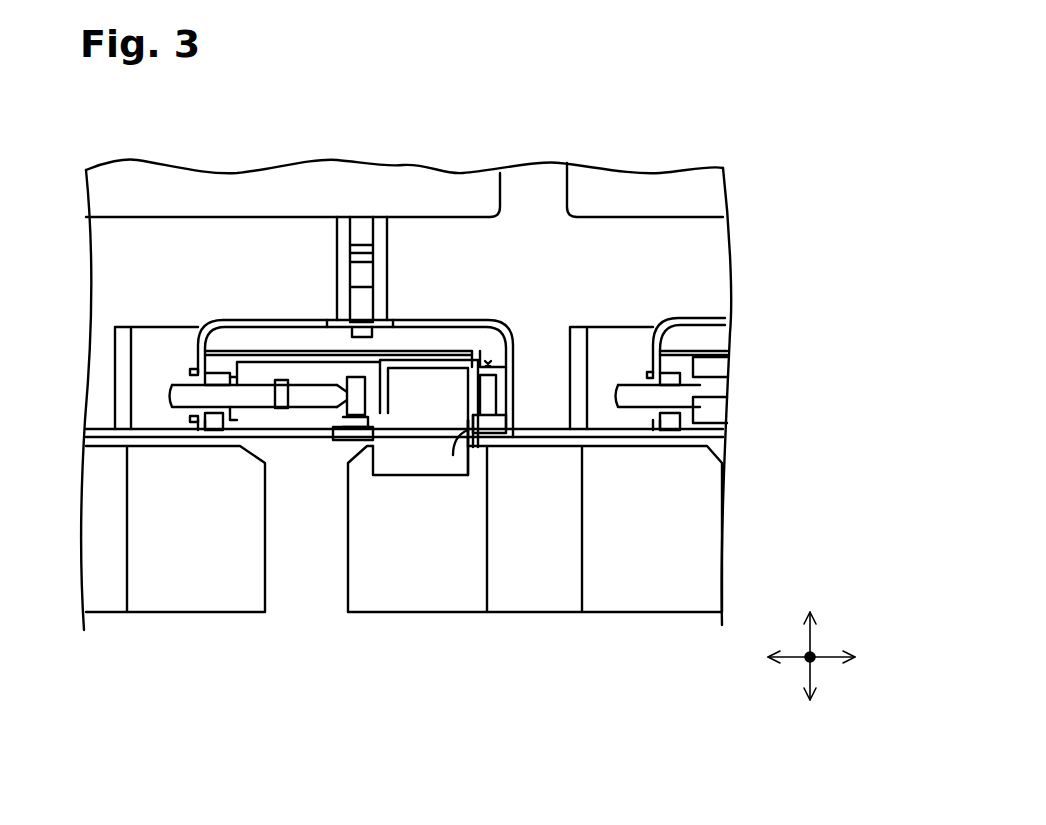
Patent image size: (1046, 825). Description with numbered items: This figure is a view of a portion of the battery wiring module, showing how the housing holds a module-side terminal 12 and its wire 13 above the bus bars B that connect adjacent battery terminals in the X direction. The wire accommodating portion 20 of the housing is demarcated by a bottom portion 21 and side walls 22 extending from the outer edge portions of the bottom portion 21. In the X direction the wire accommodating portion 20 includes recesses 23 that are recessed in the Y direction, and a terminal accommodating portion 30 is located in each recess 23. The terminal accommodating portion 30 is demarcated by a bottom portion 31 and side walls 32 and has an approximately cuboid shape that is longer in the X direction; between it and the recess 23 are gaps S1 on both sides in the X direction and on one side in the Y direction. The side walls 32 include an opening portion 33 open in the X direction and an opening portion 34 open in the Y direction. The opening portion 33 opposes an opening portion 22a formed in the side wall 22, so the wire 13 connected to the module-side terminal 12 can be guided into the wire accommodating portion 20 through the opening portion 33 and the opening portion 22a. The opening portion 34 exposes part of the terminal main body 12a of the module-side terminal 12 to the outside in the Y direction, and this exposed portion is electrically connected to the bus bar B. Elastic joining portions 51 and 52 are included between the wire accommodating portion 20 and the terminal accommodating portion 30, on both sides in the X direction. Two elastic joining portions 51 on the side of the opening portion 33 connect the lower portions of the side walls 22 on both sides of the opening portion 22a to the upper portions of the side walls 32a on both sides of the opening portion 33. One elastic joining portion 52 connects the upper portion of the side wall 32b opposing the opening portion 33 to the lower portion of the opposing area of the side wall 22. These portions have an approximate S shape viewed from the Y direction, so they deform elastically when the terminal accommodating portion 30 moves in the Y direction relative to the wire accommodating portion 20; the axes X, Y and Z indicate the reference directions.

The wire accommodating portion 20 is at (715, 227).
The bottom portion 21 is at (715, 253).
The side walls 22 is at (489, 319).
The opening portion 22a is at (180, 421).
The recesses 23 is at (457, 334).
The terminal accommodating portion 30 is at (310, 350).
The bottom portions 31 is at (267, 373).
The side walls 32 is at (398, 360).
The side walls 32a is at (233, 426).
The side wall 32b is at (462, 372).
The opening portion 33 is at (258, 421).
The opening portion 34 is at (462, 478).
The module-side terminal 12 is at (398, 472).
The terminal main body 12a is at (418, 472).
The wire 13 is at (185, 388).
The elastic joining portions 51 is at (226, 370).
The elastic joining portion 52 is at (498, 396).
The gaps S1 is at (493, 367).
The bus bars B is at (187, 601).
The X direction X is at (796, 662).
The Y direction Y is at (813, 640).
The Z axis Z is at (815, 665).